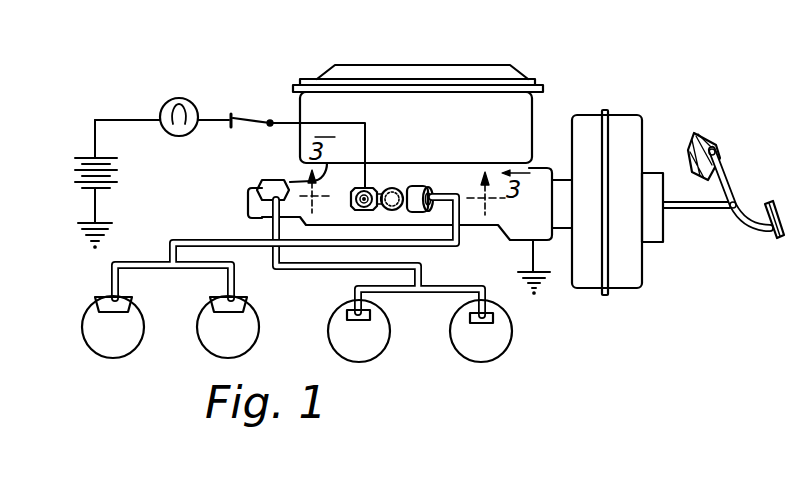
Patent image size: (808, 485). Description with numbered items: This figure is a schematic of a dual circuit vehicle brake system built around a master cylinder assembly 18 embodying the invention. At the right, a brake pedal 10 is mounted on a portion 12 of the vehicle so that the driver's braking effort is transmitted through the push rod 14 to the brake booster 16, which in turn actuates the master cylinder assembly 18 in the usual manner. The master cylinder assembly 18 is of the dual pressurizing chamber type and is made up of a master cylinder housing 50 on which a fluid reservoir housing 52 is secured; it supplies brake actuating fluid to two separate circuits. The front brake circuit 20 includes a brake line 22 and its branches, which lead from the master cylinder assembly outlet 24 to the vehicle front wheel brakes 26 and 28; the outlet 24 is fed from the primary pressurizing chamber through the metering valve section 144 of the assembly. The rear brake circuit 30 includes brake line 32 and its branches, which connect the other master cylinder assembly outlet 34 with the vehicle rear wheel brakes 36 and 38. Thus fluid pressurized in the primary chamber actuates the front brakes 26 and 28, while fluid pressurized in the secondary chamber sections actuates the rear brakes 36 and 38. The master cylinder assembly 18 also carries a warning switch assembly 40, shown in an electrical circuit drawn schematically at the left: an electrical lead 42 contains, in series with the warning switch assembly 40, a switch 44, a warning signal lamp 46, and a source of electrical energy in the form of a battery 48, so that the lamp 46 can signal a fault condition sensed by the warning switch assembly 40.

The brake pedal 10 is at (778, 204).
The portion of a vehicle 12 is at (697, 144).
The push rod 14 is at (684, 208).
The brake booster 16 is at (620, 128).
The master cylinder assembly 18 is at (378, 62).
The front brake circuit 20 is at (178, 239).
The brake line 22 is at (252, 248).
The master cylinder assembly outlet 24 is at (430, 187).
The front wheel brake 26 is at (105, 304).
The front wheel brake 28 is at (215, 305).
The rear brake circuit 30 is at (263, 226).
The brake line 32 is at (341, 270).
The master cylinder assembly outlet 34 is at (273, 180).
The rear wheel brake 36 is at (368, 315).
The rear wheel brake 38 is at (495, 318).
The warning switch assembly 40 is at (366, 187).
The electrical lead 42 is at (290, 121).
The switch 44 is at (240, 116).
The warning signal lamp 46 is at (175, 98).
The battery 48 is at (85, 156).
The master cylinder housing 50 is at (498, 233).
The fluid reservoir housing 52 is at (532, 81).
The metering valve section 144 is at (402, 187).